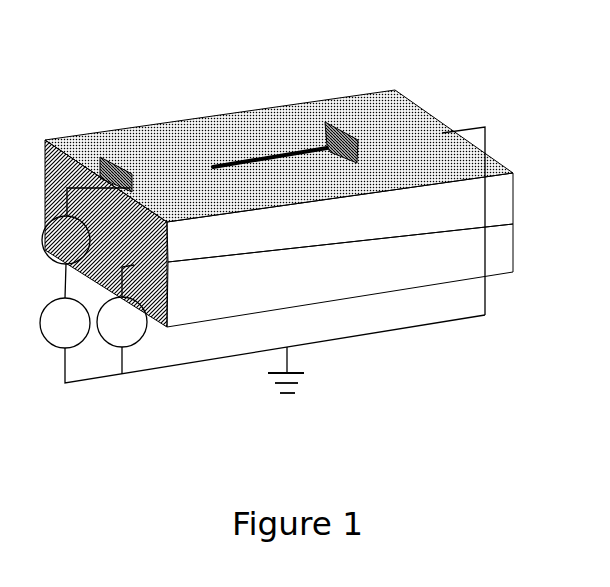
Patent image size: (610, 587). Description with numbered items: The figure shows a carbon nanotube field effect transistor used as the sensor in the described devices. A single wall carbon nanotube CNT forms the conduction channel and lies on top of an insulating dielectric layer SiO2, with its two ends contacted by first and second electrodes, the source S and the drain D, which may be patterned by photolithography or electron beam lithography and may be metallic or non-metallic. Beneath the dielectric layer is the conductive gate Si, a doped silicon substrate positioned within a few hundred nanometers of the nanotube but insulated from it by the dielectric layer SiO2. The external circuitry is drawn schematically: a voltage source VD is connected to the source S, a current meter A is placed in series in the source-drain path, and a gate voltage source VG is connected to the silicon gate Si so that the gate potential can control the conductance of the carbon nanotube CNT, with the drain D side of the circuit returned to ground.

The carbon nanotube CNT is at (256, 140).
The source electrode S is at (115, 181).
The drain electrode D is at (405, 213).
The insulating dielectric layer SiO2 is at (340, 217).
The conductive gate Si is at (340, 275).
The drain voltage source VD is at (66, 240).
The gate voltage source VG is at (122, 319).
The ammeter A is at (65, 323).